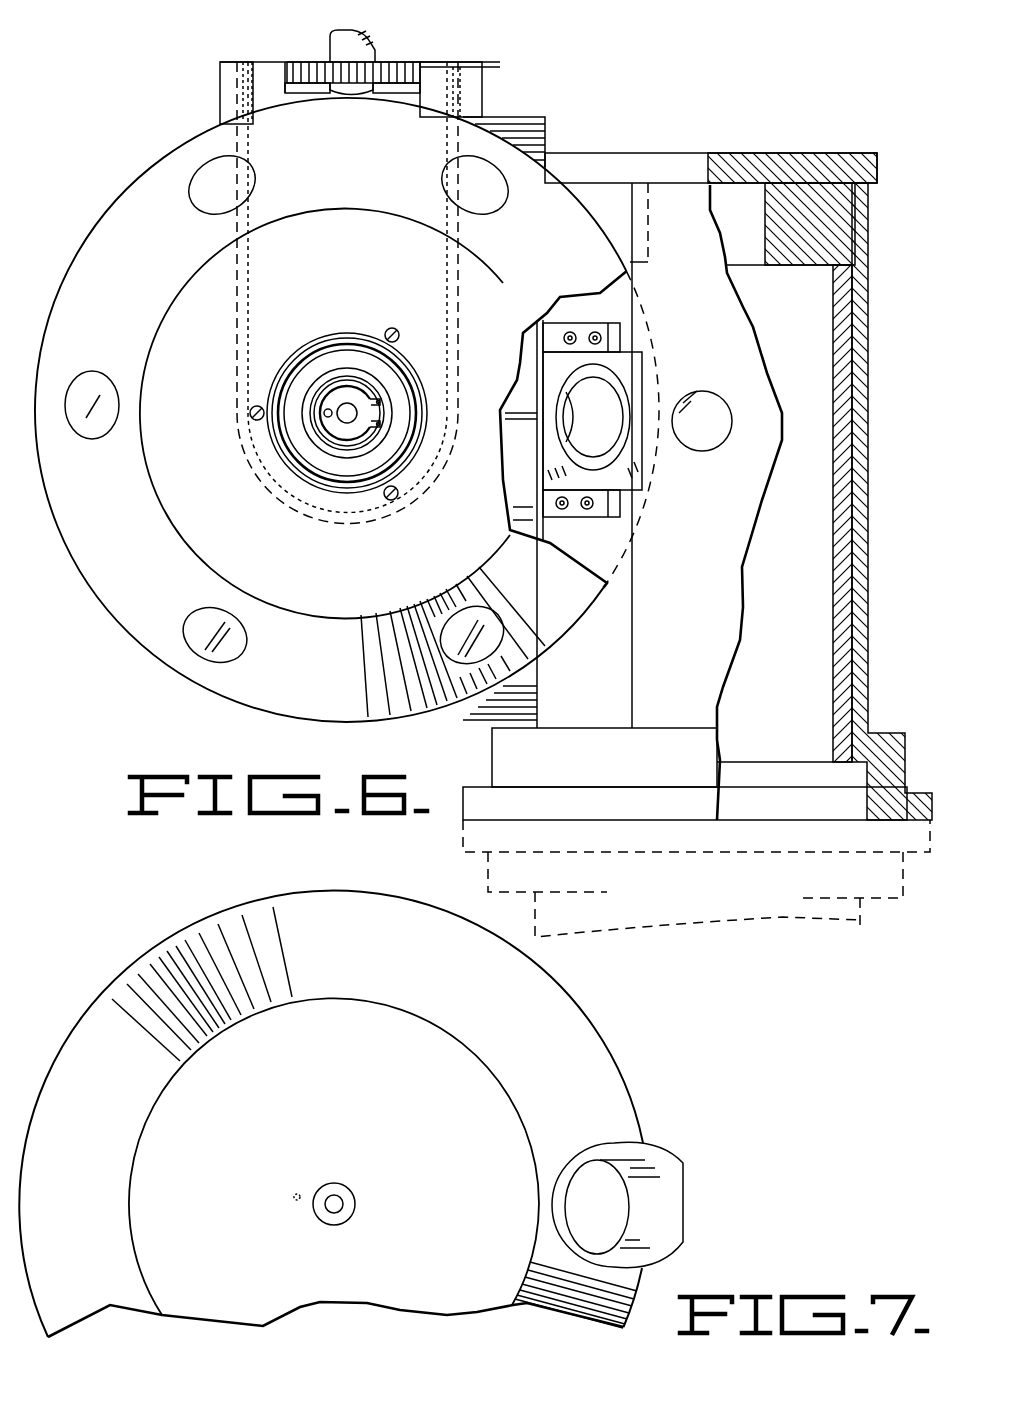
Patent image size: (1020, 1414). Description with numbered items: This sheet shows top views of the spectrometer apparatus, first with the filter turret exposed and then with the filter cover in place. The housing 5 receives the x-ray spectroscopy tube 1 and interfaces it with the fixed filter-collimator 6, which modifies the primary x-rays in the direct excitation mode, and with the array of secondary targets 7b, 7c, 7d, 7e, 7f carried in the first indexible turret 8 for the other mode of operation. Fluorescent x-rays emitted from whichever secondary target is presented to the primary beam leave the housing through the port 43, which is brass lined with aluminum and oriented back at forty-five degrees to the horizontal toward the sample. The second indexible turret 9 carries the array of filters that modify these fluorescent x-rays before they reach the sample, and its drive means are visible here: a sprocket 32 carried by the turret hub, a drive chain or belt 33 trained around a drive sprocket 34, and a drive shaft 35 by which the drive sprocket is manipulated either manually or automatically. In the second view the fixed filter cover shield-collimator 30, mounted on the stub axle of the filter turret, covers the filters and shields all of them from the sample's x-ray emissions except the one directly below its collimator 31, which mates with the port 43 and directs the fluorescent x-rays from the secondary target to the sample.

In FIG. 6, the x-ray spectroscopy tube 1 is at (765, 907).
In FIG. 6, the housing 5 is at (820, 200).
In FIG. 6, the fixed filter-collimator 6 is at (711, 433).
In FIG. 6, the secondary target 7b is at (490, 632).
In FIG. 6, the secondary target 7c is at (192, 622).
In FIG. 6, the secondary target 7d is at (95, 430).
In FIG. 6, the secondary target 7e is at (205, 200).
In FIG. 6, the secondary target 7f is at (498, 205).
In FIG. 6, the first indexible turret 8 is at (485, 722).
In FIG. 6, the second indexible turret 9 is at (100, 228).
In FIG. 6, the sprocket 32 is at (318, 312).
In FIG. 6, the drive chain or belt 33 is at (460, 66).
In FIG. 6, the drive sprocket 34 is at (397, 66).
In FIG. 6, the drive shaft 35 is at (365, 48).
In FIG. 6, the port 43 is at (610, 415).
In FIG. 7, the filter cover shield-collimator 30 is at (590, 1040).
In FIG. 7, the collimator 31 is at (668, 1160).